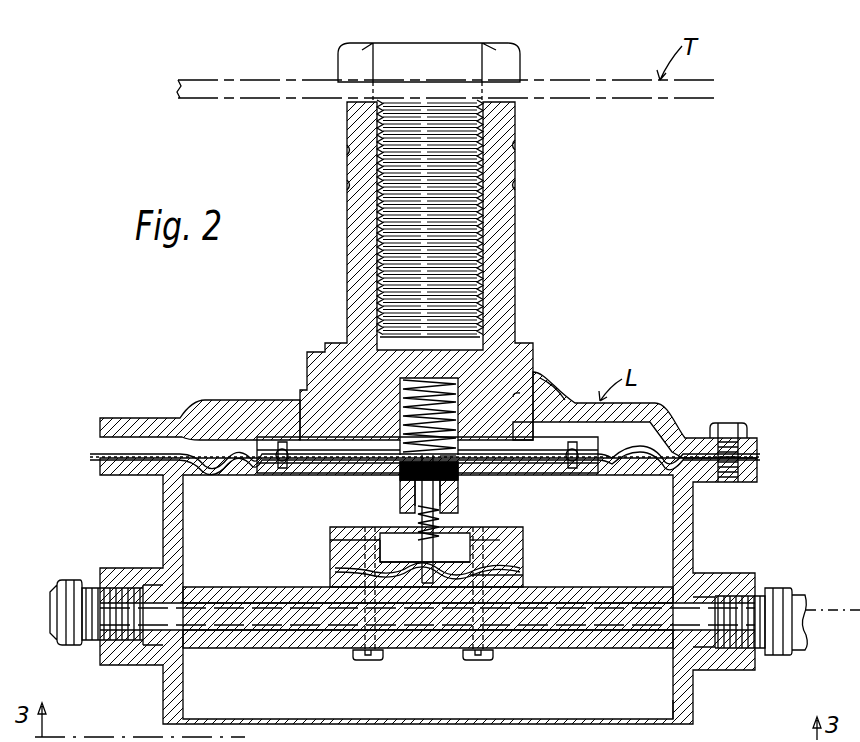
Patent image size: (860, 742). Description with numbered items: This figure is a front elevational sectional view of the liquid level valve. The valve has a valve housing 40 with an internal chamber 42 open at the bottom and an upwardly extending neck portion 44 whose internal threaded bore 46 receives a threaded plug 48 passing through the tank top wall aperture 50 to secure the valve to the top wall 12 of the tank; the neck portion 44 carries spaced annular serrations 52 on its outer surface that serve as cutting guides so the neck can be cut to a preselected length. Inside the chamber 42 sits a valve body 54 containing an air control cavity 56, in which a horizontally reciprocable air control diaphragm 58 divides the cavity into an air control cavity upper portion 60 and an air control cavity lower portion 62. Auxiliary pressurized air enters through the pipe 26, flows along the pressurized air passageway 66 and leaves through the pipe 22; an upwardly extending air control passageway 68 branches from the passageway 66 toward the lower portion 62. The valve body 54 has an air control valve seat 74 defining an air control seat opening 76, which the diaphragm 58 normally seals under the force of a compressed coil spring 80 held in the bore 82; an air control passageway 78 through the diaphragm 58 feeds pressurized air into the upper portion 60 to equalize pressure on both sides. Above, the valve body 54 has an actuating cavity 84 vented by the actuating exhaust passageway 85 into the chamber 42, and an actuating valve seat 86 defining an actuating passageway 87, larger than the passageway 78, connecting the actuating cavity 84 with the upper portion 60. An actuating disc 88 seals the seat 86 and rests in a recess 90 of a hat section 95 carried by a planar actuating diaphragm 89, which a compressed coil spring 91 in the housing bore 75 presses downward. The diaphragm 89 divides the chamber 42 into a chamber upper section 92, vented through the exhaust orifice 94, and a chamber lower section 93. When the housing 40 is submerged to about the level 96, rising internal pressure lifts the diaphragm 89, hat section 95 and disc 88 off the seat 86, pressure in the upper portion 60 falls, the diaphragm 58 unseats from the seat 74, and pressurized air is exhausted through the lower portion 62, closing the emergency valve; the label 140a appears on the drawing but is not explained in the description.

The top wall 12 is at (278, 78).
The pipe 22 is at (800, 653).
The pipe 26 is at (52, 646).
The valve housing 40 is at (693, 519).
The internal chamber 42 is at (224, 595).
The neck portion 44 is at (347, 200).
The internal threaded bore 46 is at (385, 175).
The threaded plug 48 is at (395, 43).
The tank top wall aperture 50 is at (470, 98).
The annular serrations 52 is at (515, 185).
The valve body 54 is at (523, 531).
The air control cavity 56 is at (380, 563).
The air control diaphragm 58 is at (380, 549).
The air control cavity upper portion 60 is at (505, 546).
The air control cavity lower portion 62 is at (505, 578).
The pressurized air passageway 66 is at (272, 621).
The air control passageway 68 is at (436, 584).
The air control valve seat 74 is at (390, 571).
The housing bore 75 is at (452, 457).
The air control seat opening 76 is at (400, 584).
The air control passageway 78 is at (428, 586).
The compressed coil spring 80 is at (395, 541).
The bore 82 is at (458, 509).
The actuating cavity 84 is at (400, 479).
The actuating exhaust passageway 85 is at (458, 486).
The actuating valve seat 86 is at (418, 501).
The actuating passageway 87 is at (418, 501).
The actuating disc 88 is at (400, 440).
The actuating diaphragm 89 is at (283, 440).
The recess 90 is at (456, 440).
The compressed coil spring 91 is at (400, 440).
The chamber upper section 92 is at (650, 420).
The chamber lower section 93 is at (658, 689).
The exhaust orifice 94 is at (100, 457).
The hat section 95 is at (514, 425).
The level 96 is at (812, 610).
The housing shoulder 140a is at (553, 380).